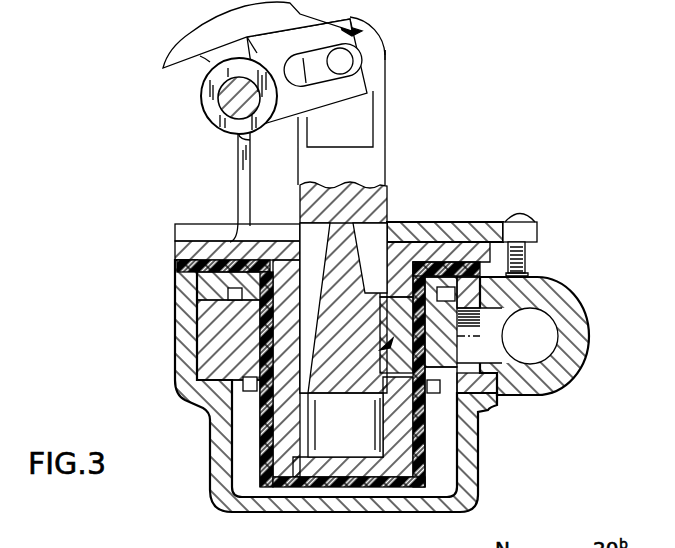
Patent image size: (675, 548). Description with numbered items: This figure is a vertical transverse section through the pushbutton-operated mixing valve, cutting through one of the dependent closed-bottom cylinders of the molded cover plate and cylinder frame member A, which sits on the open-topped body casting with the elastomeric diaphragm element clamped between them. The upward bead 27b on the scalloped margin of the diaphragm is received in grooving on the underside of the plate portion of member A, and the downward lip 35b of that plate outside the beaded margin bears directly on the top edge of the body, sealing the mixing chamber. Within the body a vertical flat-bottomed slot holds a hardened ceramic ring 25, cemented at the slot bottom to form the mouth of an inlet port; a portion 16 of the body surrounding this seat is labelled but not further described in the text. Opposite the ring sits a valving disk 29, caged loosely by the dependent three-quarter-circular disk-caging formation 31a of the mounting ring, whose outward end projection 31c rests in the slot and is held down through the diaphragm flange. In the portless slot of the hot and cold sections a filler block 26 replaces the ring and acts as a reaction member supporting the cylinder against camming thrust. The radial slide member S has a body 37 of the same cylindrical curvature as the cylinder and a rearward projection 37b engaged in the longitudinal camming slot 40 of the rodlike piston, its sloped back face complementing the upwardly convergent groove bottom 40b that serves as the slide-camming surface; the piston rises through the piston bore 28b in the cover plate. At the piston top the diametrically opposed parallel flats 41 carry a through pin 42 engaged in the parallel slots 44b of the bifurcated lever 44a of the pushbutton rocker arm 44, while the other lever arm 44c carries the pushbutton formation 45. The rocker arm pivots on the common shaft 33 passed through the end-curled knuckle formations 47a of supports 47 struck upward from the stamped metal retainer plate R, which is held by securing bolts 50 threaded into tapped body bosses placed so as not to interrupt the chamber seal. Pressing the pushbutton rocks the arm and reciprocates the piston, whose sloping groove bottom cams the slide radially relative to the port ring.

The mounting boss 16 is at (552, 333).
The hardened ceramic ring 25 is at (473, 328).
The filler block 26 is at (217, 330).
The upward bead 27b is at (187, 268).
The piston bore 28b is at (385, 428).
The disk 29 is at (440, 383).
The disk-caging formation 31a is at (255, 385).
The outward end projection 31c is at (205, 282).
The common shaft 33 is at (220, 113).
The lip 35b is at (185, 270).
The slide body 37 is at (427, 245).
The rearward projection 37b is at (385, 290).
The camming slot 40 is at (387, 222).
The groove bottom 40b is at (370, 235).
The parallel flats 41 is at (357, 123).
The through pin 42 is at (352, 60).
The pushbutton rocker arm 44 is at (362, 30).
The lever 44a is at (362, 80).
The parallel slots 44b is at (385, 53).
The other lever arm 44c is at (200, 56).
The pushbutton formation 45 is at (186, 44).
The support 47 is at (238, 167).
The end-curled knuckle formation 47a is at (235, 122).
The securing bolt 50 is at (518, 214).
The cover plate and plural cylinder frame member A is at (175, 236).
The stamped metal retainer plate R is at (485, 212).
The radial slide member S is at (352, 395).